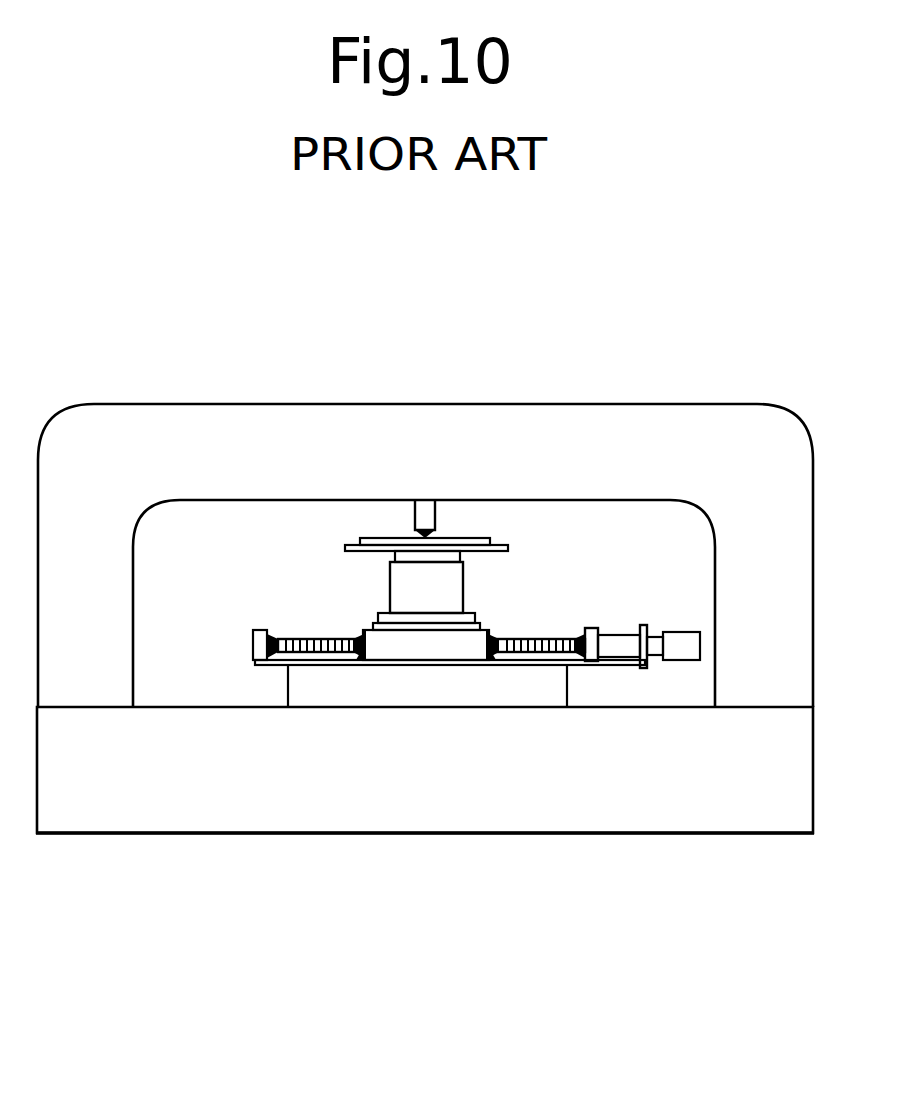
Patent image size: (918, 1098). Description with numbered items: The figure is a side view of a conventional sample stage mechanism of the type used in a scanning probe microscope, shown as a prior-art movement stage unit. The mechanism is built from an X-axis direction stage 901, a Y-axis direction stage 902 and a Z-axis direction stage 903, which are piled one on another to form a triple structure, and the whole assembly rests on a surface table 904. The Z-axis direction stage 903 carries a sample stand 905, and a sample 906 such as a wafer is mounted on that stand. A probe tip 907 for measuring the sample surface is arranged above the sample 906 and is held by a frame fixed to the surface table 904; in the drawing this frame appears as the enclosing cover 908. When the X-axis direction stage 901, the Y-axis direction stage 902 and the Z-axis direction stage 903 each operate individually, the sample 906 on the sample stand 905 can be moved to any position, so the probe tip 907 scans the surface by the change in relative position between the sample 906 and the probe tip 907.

The X-axis direction stage 901 is at (560, 690).
The Y-axis direction stage 902 is at (493, 630).
The Z-axis direction stage 903 is at (460, 585).
The surface table 904 is at (117, 823).
The sample stand 905 is at (345, 547).
The sample 906 is at (482, 538).
The probe tip 907 is at (427, 520).
The outer housing / cover 908 is at (313, 422).